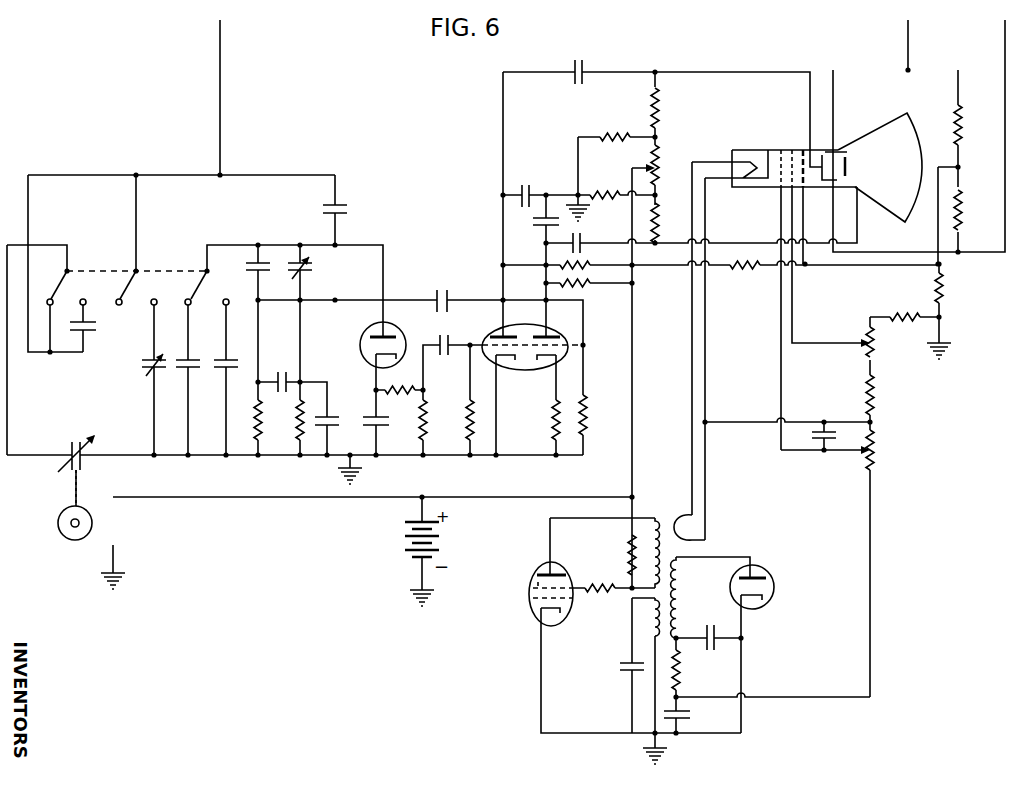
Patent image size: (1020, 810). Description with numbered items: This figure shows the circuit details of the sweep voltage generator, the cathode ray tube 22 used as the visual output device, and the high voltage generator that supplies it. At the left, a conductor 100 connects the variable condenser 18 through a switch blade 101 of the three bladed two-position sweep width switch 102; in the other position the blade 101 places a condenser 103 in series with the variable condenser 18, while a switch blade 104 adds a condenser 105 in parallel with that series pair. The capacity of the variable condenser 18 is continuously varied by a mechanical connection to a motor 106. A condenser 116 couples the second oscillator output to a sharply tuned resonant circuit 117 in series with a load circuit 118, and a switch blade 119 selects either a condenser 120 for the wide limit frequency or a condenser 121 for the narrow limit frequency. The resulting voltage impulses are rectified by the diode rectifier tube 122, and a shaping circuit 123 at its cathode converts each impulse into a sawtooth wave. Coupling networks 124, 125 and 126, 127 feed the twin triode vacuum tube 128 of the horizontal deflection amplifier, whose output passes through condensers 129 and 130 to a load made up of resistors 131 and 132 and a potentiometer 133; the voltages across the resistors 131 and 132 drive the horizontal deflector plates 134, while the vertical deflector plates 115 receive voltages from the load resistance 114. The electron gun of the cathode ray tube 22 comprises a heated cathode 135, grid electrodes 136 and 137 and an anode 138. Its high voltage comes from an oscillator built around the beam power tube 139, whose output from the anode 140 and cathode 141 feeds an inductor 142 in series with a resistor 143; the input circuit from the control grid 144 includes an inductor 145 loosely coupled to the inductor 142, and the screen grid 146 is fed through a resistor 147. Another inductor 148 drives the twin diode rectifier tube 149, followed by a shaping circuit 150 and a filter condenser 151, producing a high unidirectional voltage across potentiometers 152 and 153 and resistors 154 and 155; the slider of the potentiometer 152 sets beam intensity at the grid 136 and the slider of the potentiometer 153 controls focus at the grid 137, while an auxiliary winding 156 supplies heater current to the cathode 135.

The conductor 100 is at (222, 62).
The switch blade 101 is at (61, 289).
The sweep width switch 102 is at (108, 270).
The condenser 103 is at (96, 330).
The switch blade 104 is at (130, 289).
The condenser 105 is at (147, 379).
The motor 106 is at (97, 537).
The variable condenser 18 is at (68, 448).
The cathode ray tube 22 is at (886, 126).
The load resistance 114 is at (960, 158).
The vertical deflector plates 115 is at (848, 156).
The condenser 116 is at (347, 208).
The resonant circuit 117 is at (327, 297).
The load circuit 118 is at (290, 443).
The switch blade 119 is at (200, 289).
The condenser 120 is at (185, 373).
The condenser 121 is at (223, 373).
The rectifier tube 122 is at (369, 337).
The shaping circuit 123 is at (410, 449).
The resistive-capacitative coupling network 124 is at (448, 361).
The resistive-capacitative coupling network 125 is at (468, 412).
The resistive-capacitative coupling network 126 is at (445, 288).
The resistive-capacitative coupling network 127 is at (586, 410).
The vacuum tube 128 is at (531, 366).
The condenser 129 is at (582, 245).
The condenser 130 is at (582, 64).
The resistor 131 is at (665, 100).
The resistor 132 is at (658, 218).
The potentiometer 133 is at (658, 160).
The horizontal deflector plates 134 is at (848, 176).
The heated cathode 135 is at (760, 150).
The grid electrode 136 is at (781, 150).
The grid electrode 137 is at (792, 150).
The anode 138 is at (803, 150).
The tube 139 is at (528, 601).
The anode 140 is at (550, 570).
The cathode 141 is at (543, 615).
The inductor 142 is at (663, 522).
The resistor 143 is at (629, 550).
The control grid 144 is at (568, 598).
The inductor 145 is at (651, 622).
The screen grid 146 is at (535, 583).
The resistor 147 is at (568, 588).
The inductor 148 is at (680, 588).
The tube 149 is at (770, 575).
The shaping circuit 150 is at (729, 680).
The filter condenser 151 is at (690, 713).
The potentiometer 152 is at (878, 445).
The potentiometer 153 is at (878, 340).
The resistor 154 is at (875, 400).
The resistor 155 is at (894, 314).
The auxiliary winding 156 is at (690, 524).